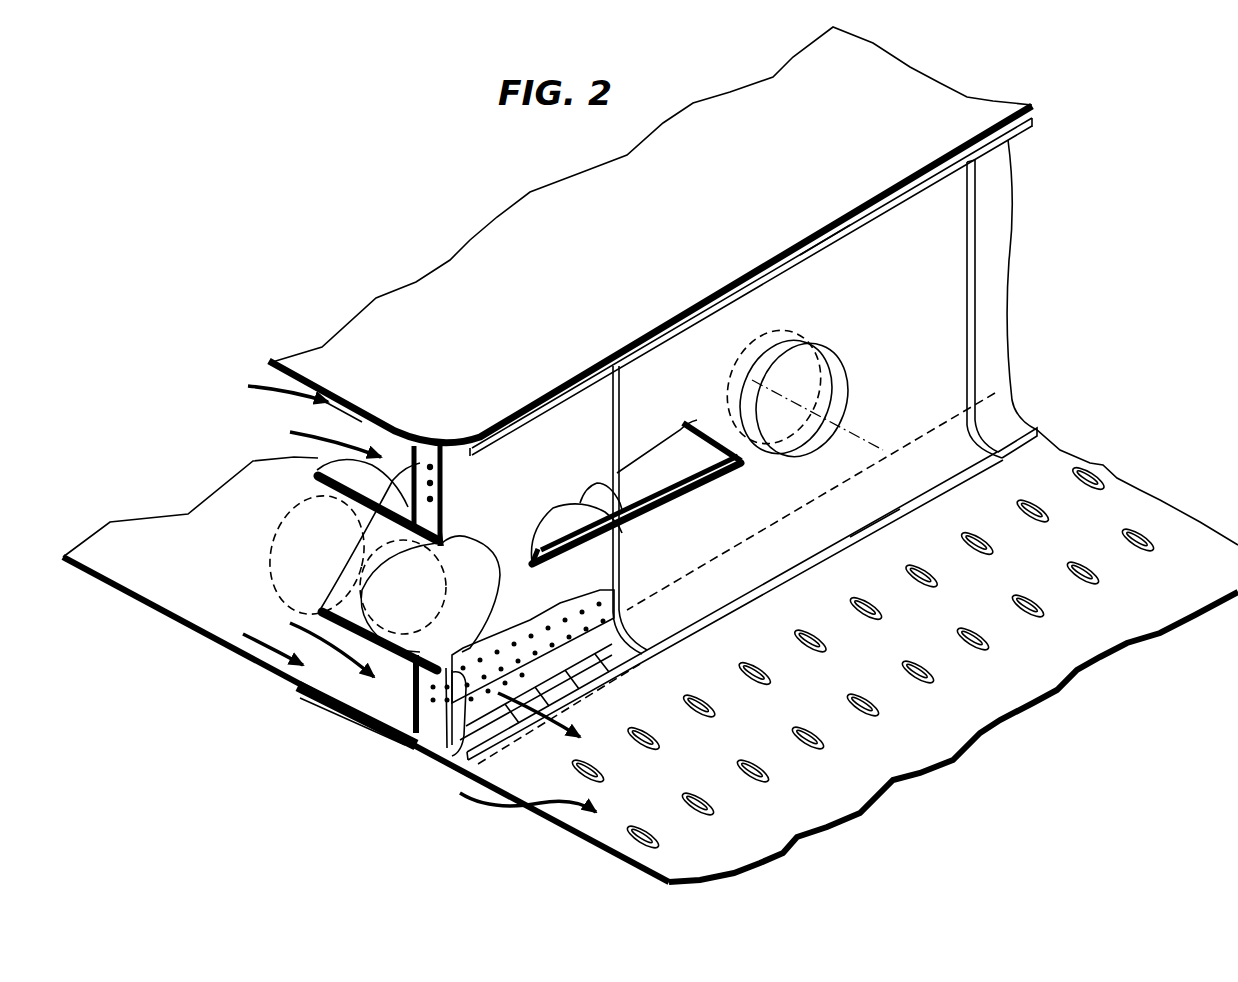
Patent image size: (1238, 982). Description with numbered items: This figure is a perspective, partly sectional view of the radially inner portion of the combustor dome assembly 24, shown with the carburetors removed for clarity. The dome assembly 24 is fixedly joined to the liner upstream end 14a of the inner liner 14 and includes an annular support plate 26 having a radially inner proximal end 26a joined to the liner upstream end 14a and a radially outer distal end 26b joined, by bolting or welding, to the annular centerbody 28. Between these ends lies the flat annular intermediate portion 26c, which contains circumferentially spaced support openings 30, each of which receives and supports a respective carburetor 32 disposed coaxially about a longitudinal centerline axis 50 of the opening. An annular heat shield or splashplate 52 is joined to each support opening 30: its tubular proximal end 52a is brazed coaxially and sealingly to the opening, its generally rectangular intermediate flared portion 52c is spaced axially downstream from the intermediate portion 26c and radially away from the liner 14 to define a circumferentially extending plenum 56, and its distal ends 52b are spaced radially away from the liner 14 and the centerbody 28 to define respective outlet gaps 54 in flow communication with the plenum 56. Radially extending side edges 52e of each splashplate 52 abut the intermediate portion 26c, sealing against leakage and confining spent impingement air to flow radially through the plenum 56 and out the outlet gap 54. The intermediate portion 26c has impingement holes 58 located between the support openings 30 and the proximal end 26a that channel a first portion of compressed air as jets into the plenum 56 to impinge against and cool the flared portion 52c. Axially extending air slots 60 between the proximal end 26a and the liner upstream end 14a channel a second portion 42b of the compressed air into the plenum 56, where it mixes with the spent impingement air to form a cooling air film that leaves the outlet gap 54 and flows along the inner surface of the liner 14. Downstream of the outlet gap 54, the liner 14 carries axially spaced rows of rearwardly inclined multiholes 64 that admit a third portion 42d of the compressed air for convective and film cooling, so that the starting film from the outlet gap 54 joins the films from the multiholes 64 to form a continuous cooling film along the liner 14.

The inner liner 14 is at (636, 877).
The liner upstream end 14a is at (435, 757).
The combustor dome assembly 24 is at (318, 714).
The support plate 26 is at (295, 698).
The support plate proximal end 26a is at (408, 645).
The support plate distal end 26b is at (336, 405).
The support plate intermediate portion 26c is at (433, 432).
The centerbody 28 is at (428, 284).
The support opening 30 is at (320, 468).
The carburetor 32 is at (812, 333).
The second portion of compressed air 42b is at (249, 650).
The third portion of compressed air 42d is at (461, 796).
The centerline axis 50 is at (862, 455).
The splashplate 52 is at (589, 402).
The splashplate proximal end 52a is at (810, 364).
The splashplate distal end 52b is at (872, 224).
The splashplate intermediate flared portion 52c is at (677, 493).
The splashplate side edges 52e is at (598, 495).
The outlet gap 54 is at (822, 236).
The plenum 56 is at (442, 520).
The impingement holes 58 is at (520, 634).
The air slots 60 is at (350, 412).
The multiholes 64 is at (743, 671).